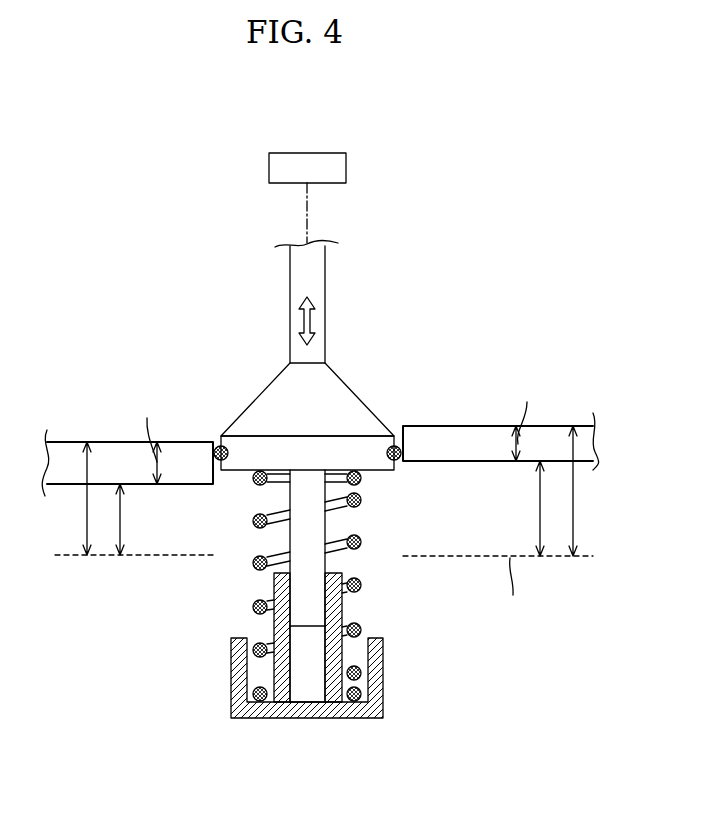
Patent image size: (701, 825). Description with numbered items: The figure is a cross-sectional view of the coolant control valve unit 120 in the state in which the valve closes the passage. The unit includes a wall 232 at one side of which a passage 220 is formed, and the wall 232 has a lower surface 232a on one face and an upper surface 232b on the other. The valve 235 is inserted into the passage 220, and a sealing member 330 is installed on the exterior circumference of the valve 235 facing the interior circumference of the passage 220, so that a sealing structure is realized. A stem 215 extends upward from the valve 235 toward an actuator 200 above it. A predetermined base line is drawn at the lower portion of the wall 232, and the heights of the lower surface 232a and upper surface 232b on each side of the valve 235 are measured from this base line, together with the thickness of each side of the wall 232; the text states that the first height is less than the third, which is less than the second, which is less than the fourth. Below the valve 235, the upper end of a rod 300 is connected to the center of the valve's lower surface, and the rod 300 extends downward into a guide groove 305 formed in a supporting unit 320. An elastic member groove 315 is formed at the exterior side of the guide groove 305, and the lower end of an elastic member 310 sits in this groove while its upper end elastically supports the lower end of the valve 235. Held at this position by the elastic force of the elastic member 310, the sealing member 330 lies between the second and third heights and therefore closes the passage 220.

The coolant control valve unit 120 is at (390, 270).
The actuator 200 is at (269, 166).
The stem 215 is at (290, 300).
The valve 235 is at (266, 388).
The sealing member 330 is at (216, 446).
The passage 220 is at (398, 428).
The wall 232 is at (431, 436).
The lower surface 232a is at (470, 461).
The upper surface 232b is at (470, 426).
The rod 300 is at (305, 588).
The guide groove 305 is at (317, 655).
The elastic member 310 is at (360, 585).
The elastic member groove 315 is at (262, 669).
The supporting unit 320 is at (305, 720).